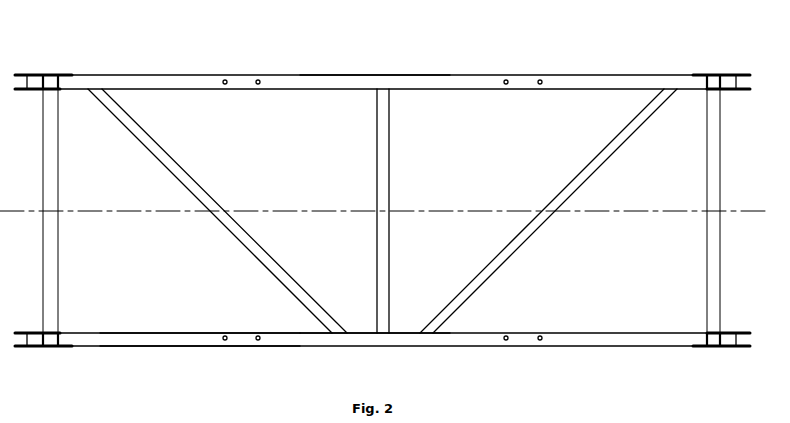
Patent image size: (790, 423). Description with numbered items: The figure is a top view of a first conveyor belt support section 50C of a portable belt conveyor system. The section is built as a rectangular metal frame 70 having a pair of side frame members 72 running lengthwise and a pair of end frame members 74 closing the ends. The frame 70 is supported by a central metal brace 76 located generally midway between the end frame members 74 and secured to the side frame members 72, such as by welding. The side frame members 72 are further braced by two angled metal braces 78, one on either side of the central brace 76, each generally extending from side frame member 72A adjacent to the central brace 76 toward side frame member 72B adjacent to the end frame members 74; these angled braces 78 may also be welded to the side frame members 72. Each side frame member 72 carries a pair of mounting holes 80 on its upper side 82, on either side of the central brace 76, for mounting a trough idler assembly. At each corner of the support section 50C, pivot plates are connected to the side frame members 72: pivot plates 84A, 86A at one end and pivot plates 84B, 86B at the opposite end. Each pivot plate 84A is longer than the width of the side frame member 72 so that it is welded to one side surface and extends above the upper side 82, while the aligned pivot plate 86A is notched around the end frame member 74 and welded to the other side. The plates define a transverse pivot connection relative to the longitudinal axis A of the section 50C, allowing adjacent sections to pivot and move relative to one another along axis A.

The first conveyor belt support section 50C is at (428, 52).
The rectangular metal frame 70 is at (118, 347).
The side frame member 72 is at (645, 82).
The side frame member 72A is at (598, 338).
The side frame member 72B is at (134, 74).
The end frame member 74 is at (55, 163).
The central metal brace 76 is at (384, 136).
The angled metal brace 78 is at (192, 185).
The mounting hole 80 is at (268, 72).
The upper side 82 is at (353, 75).
The pivot plate 84A is at (728, 75).
The pivot plate 84B is at (48, 74).
The pivot plate 86A is at (727, 90).
The pivot plate 86B is at (45, 90).
The longitudinal axis A is at (752, 211).